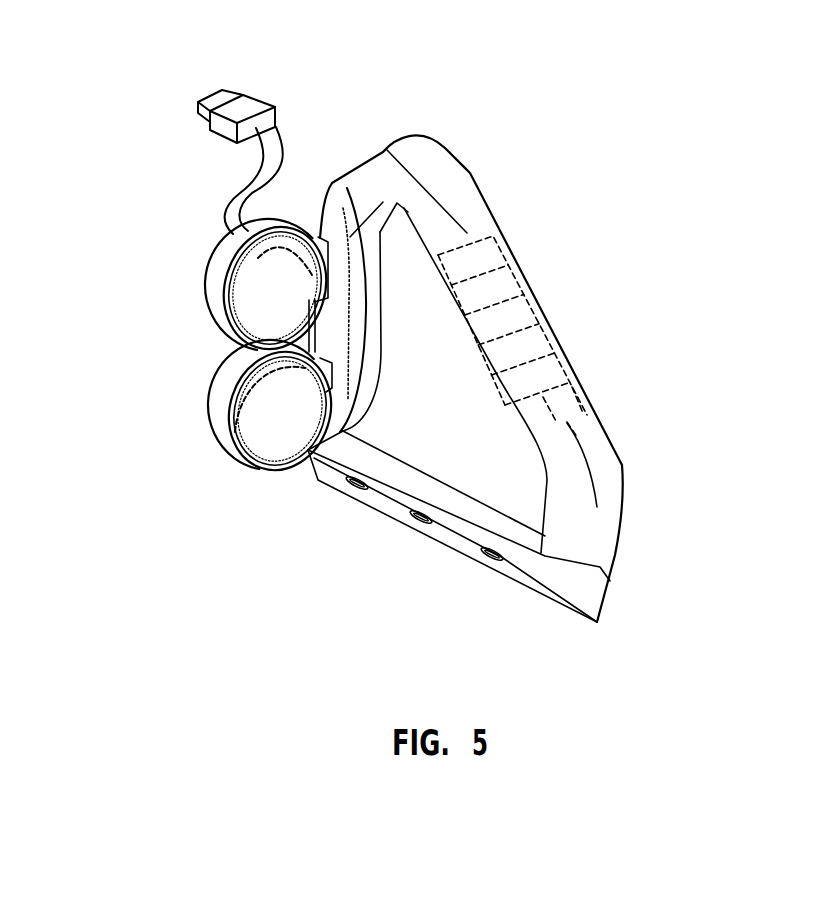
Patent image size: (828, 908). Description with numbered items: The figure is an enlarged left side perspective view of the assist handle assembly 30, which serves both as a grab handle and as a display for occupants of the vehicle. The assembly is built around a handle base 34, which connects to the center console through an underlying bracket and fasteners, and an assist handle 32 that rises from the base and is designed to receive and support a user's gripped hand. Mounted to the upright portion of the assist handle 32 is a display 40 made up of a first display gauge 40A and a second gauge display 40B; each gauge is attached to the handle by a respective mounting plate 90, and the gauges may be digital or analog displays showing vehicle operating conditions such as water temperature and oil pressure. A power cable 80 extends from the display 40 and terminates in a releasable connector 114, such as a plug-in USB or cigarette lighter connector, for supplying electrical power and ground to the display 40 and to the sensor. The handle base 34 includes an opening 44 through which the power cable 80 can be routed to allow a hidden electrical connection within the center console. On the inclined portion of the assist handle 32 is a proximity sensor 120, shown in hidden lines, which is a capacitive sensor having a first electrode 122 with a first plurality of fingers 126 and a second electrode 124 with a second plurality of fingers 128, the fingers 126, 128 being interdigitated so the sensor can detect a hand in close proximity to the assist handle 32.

The assist handle assembly 30 is at (460, 108).
The assist handle 32 is at (485, 200).
The handle base 34 is at (456, 549).
The opening 44 is at (414, 519).
The display 40 is at (200, 348).
The first display gauge 40A is at (213, 287).
The second gauge display 40B is at (213, 407).
The power cable 80 is at (280, 160).
The mounting plate 90 is at (347, 188).
The releasable connector 114 is at (253, 100).
The proximity sensor 120 is at (522, 243).
The first electrode 122 is at (468, 318).
The second electrode 124 is at (548, 327).
The first plurality of fingers 126 is at (520, 378).
The second plurality of fingers 128 is at (573, 380).